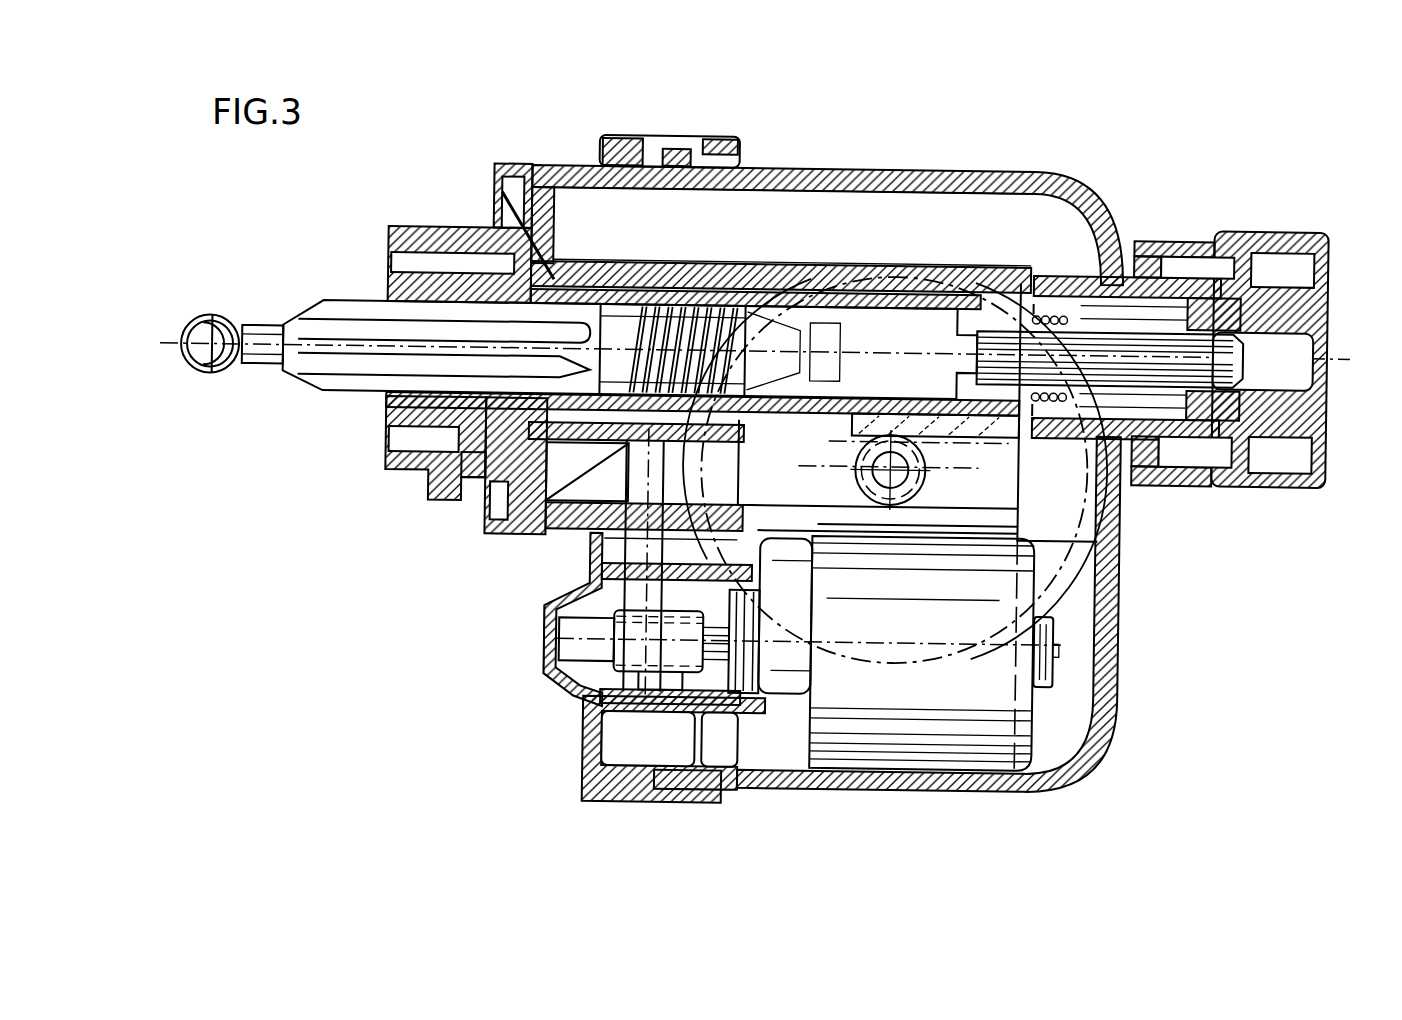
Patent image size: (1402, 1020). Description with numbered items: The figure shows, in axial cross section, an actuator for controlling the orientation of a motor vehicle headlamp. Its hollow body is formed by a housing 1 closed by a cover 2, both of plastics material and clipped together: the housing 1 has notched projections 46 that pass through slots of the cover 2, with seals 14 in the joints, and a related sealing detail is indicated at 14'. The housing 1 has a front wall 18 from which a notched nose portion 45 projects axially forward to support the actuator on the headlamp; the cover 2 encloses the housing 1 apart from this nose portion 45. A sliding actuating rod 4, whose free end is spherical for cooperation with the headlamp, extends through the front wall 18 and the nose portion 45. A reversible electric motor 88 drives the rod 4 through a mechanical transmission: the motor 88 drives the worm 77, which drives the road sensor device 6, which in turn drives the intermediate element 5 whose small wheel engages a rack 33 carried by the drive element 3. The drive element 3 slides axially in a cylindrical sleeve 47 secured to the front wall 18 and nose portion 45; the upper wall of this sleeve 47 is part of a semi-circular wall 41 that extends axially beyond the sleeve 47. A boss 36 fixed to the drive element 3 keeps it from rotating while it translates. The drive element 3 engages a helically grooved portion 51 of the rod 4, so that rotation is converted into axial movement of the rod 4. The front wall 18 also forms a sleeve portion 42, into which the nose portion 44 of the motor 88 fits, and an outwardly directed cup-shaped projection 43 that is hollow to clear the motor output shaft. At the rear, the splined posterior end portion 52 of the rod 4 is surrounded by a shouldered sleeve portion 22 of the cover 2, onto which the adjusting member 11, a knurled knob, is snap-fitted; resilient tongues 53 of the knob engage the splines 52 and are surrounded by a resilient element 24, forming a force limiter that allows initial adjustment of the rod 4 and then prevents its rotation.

The housing 1 is at (575, 512).
The cover 2 is at (1104, 686).
The drive element 3 is at (554, 282).
The actuating rod 4 is at (236, 306).
The intermediate element 5 is at (1075, 570).
The road sensor device 6 is at (592, 566).
The adjusting member 11 is at (1270, 240).
The seals 14 is at (508, 159).
The boss 14' is at (671, 124).
The front wall 18 is at (490, 562).
The shouldered sleeve portion 22 is at (1168, 262).
The resilient element 24 is at (1062, 285).
The rack 33 is at (980, 455).
The boss 36 is at (505, 532).
The semi-circular wall 41 is at (745, 265).
The sleeve portion 42 is at (742, 700).
The cup-shaped projection 43 is at (548, 660).
The nose portion of the electric motor 44 is at (735, 680).
The nose portion 45 is at (416, 228).
The notched projections 46 is at (640, 806).
The cylindrical sleeve 47 is at (470, 478).
The portion of the actuating rod 51 is at (575, 366).
The posterior end portion 52 is at (1250, 386).
The resilient tongues 53 is at (1040, 316).
The worm 77 is at (640, 655).
The electric motor 88 is at (935, 725).